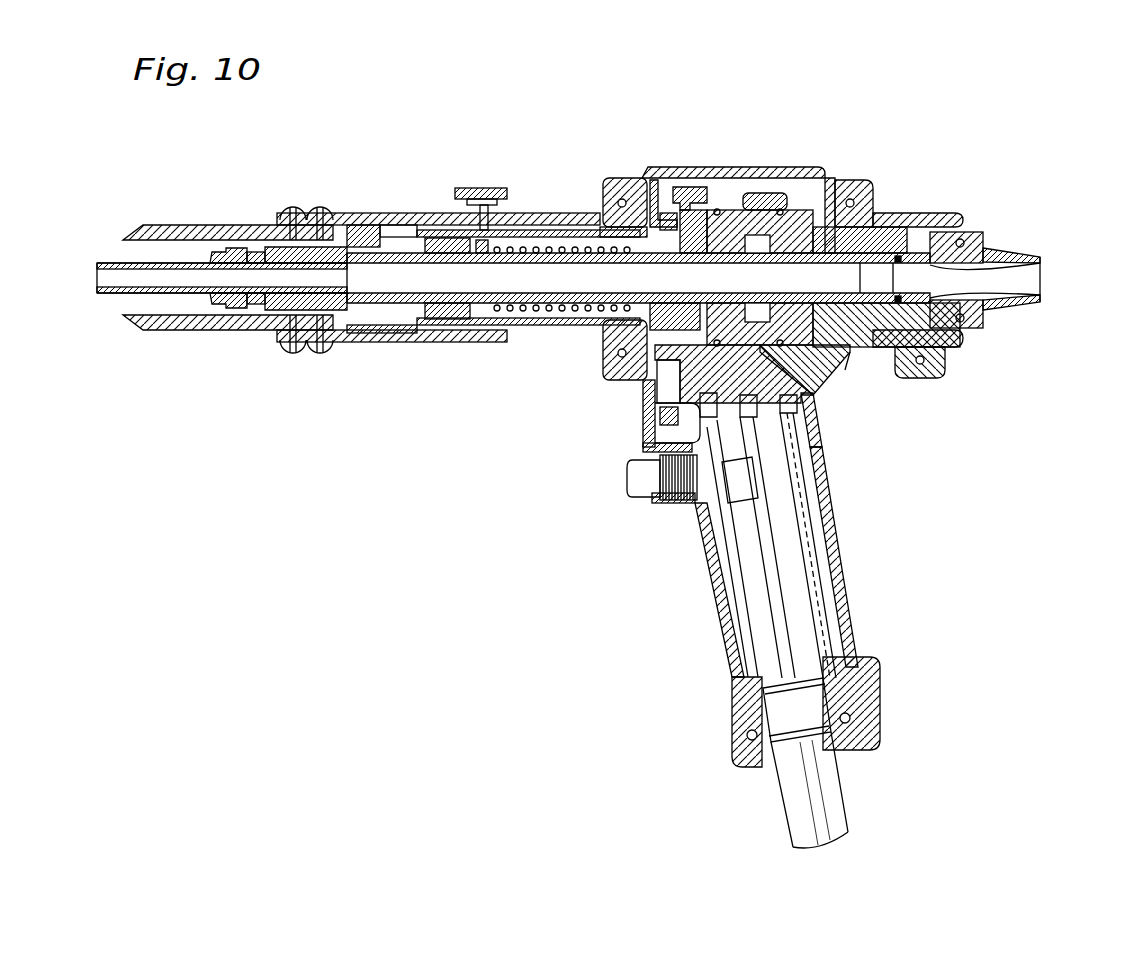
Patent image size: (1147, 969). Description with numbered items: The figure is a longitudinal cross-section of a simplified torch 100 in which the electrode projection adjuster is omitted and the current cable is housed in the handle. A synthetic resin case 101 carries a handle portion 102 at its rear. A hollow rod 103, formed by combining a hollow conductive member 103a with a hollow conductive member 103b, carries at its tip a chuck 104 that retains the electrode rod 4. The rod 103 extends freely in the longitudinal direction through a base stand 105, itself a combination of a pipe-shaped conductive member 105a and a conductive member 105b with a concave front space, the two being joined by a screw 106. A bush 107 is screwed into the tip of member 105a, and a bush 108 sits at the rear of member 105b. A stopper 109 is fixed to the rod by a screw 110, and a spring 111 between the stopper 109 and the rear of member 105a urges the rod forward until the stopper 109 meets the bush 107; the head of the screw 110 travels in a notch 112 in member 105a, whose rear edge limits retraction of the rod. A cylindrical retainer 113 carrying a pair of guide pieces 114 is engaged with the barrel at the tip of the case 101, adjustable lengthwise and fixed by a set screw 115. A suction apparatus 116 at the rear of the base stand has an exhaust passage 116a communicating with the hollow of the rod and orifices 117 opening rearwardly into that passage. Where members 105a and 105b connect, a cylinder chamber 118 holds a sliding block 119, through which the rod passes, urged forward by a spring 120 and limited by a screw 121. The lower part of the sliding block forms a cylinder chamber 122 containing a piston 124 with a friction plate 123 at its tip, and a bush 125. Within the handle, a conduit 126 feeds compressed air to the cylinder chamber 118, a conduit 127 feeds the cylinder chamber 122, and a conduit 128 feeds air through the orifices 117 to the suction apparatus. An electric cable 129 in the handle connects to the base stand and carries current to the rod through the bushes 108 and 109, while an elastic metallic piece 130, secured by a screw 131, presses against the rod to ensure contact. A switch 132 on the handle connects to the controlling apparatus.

The electrode rod 4 is at (108, 260).
The torch 100 is at (712, 160).
The case 101 is at (752, 170).
The handle portion 102 is at (847, 590).
The hollow rod 103 is at (573, 252).
The hollow conductive member 103a is at (273, 257).
The hollow conductive member 103b is at (407, 233).
The chuck 104 is at (215, 255).
The base stand 105 is at (805, 205).
The pipe-shaped conductive member 105a is at (537, 322).
The conductive member 105b is at (880, 217).
The screw 106 is at (695, 193).
The bush 107 is at (410, 303).
The bush 108 is at (940, 350).
The stopper 109 is at (468, 322).
The screw 110 is at (472, 262).
The spring 111 is at (533, 252).
The notch 112 is at (510, 240).
The cylindrical retainer 113 is at (353, 213).
The guide pieces 114 is at (160, 230).
The set screw 115 is at (465, 188).
The suction apparatus 116 is at (1007, 250).
The exhaust passage 116a is at (970, 288).
The open orifices 117 is at (960, 313).
The cylinder chamber 118 is at (663, 398).
The sliding block 119 is at (775, 183).
The spring 120 is at (863, 183).
The screw 121 is at (655, 185).
The cylinder chamber 122 is at (805, 390).
The friction plate 123 is at (648, 458).
The piston 124 is at (823, 378).
The bush 125 is at (845, 370).
The conduit 126 is at (733, 538).
The conduit 127 is at (753, 467).
The conduit 128 is at (793, 437).
The electric cable 129 is at (782, 520).
The elastic metallic piece 130 is at (605, 343).
The screw 131 is at (662, 383).
The switch 132 is at (650, 490).